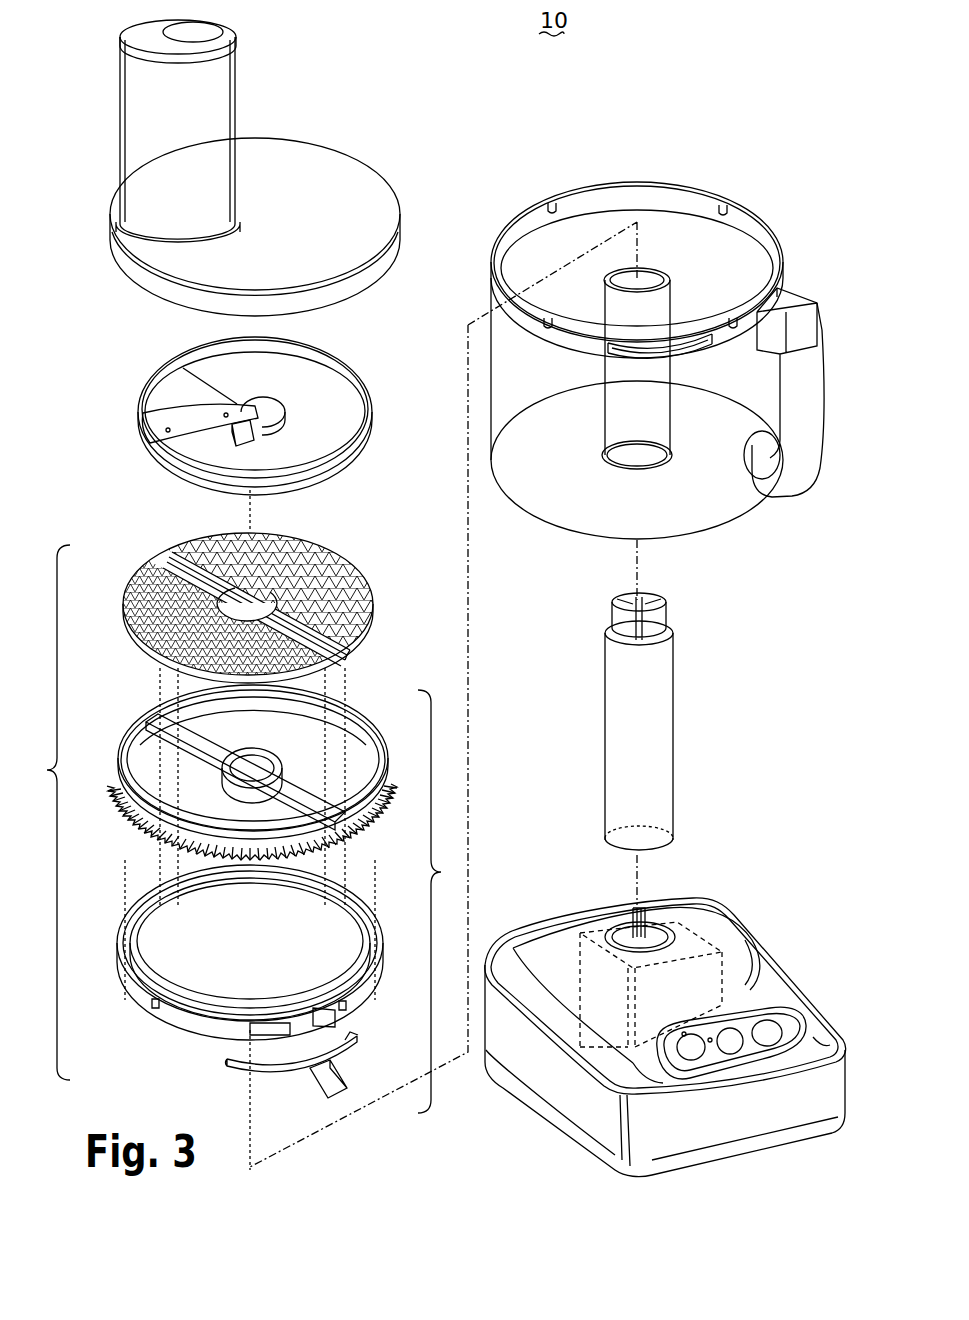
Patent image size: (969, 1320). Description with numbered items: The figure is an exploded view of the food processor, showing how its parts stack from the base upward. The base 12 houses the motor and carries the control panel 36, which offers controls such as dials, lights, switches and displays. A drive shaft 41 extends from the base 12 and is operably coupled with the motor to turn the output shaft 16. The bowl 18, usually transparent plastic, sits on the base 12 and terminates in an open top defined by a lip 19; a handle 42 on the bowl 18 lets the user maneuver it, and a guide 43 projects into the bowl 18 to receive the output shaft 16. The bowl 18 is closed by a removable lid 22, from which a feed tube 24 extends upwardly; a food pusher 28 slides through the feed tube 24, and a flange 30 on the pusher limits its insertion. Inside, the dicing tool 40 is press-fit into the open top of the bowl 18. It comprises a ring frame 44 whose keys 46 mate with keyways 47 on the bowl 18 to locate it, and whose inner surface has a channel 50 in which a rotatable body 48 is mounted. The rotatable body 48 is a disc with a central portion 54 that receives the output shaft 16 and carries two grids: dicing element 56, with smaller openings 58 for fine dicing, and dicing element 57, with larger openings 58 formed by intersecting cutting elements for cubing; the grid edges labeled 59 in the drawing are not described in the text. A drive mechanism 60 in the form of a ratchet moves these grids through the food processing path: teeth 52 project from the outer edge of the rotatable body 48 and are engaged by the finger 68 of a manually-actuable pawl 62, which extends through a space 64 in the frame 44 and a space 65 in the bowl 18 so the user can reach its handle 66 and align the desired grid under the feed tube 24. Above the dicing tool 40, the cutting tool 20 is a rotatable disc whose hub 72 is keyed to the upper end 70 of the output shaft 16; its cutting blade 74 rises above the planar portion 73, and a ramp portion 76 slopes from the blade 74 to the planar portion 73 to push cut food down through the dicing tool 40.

The base 12 is at (670, 1020).
The output shaft 16 is at (677, 720).
The bowl 18 is at (679, 353).
The lip 19 is at (780, 282).
The cutting tool 20 is at (232, 410).
The lid 22 is at (108, 201).
The feed tube 24 is at (121, 99).
The food pusher 28 is at (210, 95).
The flange 30 is at (125, 46).
The control panel 36 is at (770, 1035).
The dicing tool 40 is at (44, 812).
The drive shaft 41 is at (633, 912).
The handle 42 is at (802, 338).
The guide 43 is at (675, 300).
The frame 44 is at (240, 1017).
The keys 46 is at (153, 1005).
The keyways 47 is at (553, 200).
The rotatable body 48 is at (264, 781).
The channel 50 is at (170, 905).
The teeth 52 is at (312, 840).
The central portion 54 is at (268, 768).
The dicing element 56 is at (249, 604).
The dicing element 57 is at (308, 543).
The openings 58 is at (126, 590).
The grid blade 59 is at (137, 580).
The drive mechanism 60 is at (444, 901).
The pawl 62 is at (304, 1089).
The space 64 is at (270, 1035).
The space 65 is at (712, 342).
The handle 66 is at (323, 1094).
The finger 68 is at (355, 1036).
The upper end 70 is at (668, 612).
The hub 72 is at (245, 440).
The planar portion 73 is at (313, 385).
The cutting blade 74 is at (180, 428).
The ramp portion 76 is at (175, 388).